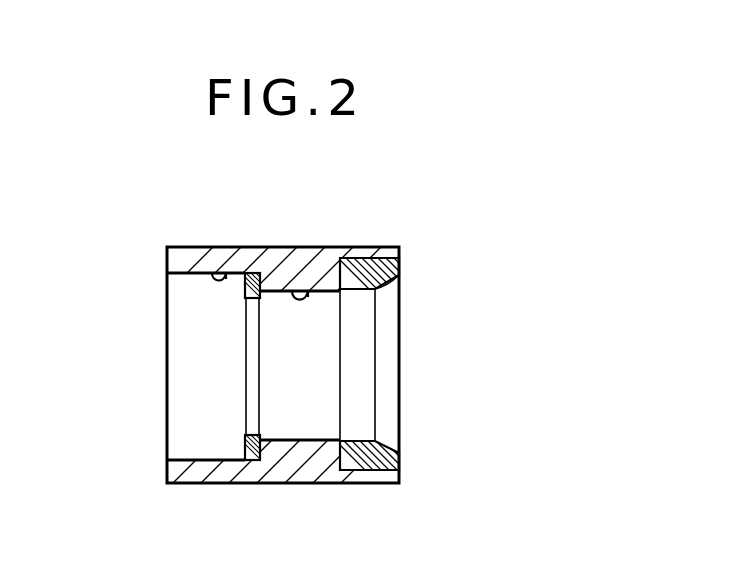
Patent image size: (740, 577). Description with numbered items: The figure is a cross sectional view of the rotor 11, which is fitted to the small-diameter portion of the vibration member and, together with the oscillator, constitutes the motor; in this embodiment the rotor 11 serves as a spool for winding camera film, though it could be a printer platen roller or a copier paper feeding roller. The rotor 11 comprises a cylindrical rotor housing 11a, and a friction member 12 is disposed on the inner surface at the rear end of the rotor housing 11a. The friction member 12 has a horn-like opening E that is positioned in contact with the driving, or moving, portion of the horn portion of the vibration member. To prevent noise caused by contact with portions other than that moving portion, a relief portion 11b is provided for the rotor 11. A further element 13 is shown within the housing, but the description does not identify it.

The rotor 11 is at (292, 368).
The cylindrical rotor housing 11a is at (283, 484).
The relief portion 11b is at (303, 292).
The friction member 12 is at (385, 456).
The disc / retaining clip 13 is at (252, 433).
The horn-like opening E is at (386, 283).